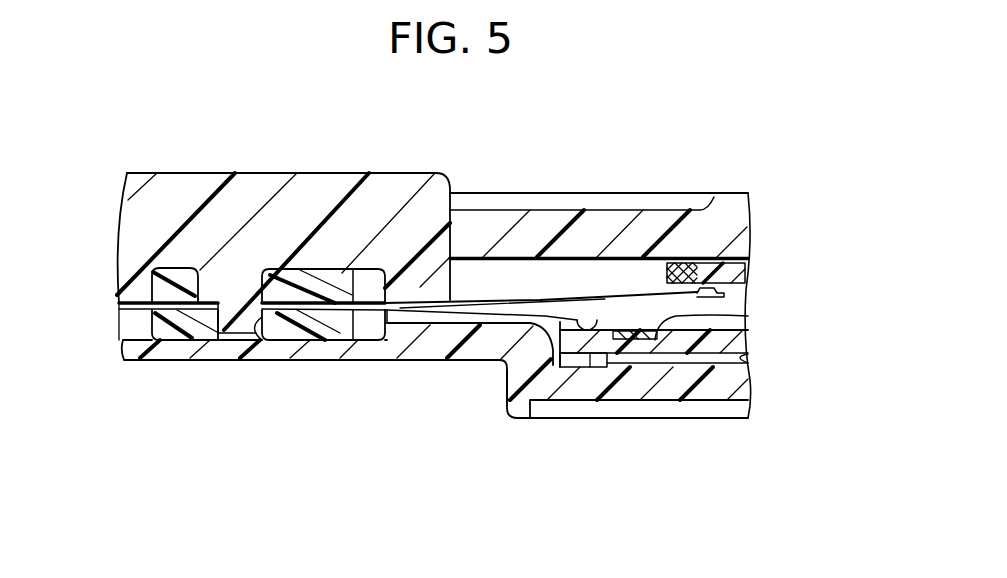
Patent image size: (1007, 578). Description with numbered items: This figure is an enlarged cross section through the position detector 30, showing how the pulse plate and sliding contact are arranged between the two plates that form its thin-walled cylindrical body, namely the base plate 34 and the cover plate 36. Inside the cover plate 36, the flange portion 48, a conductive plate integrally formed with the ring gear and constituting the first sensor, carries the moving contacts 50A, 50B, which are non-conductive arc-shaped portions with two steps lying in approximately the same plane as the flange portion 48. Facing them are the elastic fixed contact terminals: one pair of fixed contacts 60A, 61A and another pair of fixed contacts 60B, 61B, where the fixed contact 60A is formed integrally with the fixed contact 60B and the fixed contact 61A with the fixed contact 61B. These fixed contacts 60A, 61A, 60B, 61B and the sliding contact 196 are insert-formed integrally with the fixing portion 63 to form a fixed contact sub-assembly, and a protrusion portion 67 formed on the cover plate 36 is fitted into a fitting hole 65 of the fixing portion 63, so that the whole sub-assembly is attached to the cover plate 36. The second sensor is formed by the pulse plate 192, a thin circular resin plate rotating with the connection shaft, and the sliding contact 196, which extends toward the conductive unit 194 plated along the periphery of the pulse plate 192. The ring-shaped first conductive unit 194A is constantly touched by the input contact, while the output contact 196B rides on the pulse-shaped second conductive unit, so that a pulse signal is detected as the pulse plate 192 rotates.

The position detector 30 is at (716, 167).
The base plate 34 is at (412, 362).
The cover plate 36 is at (343, 172).
The flange portion 48 is at (727, 253).
The moving contact 50A is at (777, 284).
The moving contact 50B is at (743, 300).
The fixed contact 60A is at (408, 234).
The fixed contact 60B is at (408, 234).
The fixed contact 61A is at (408, 234).
The fixed contact 61B is at (622, 290).
The fixing portion 63 is at (312, 339).
The fitting hole 65 is at (255, 342).
The protrusion portion 67 is at (228, 345).
The pulse plate 192 is at (748, 360).
The conductive unit 194 is at (744, 324).
The first conductive unit 194A is at (748, 320).
The sliding contact 196 is at (463, 411).
The output contact 196B is at (503, 363).